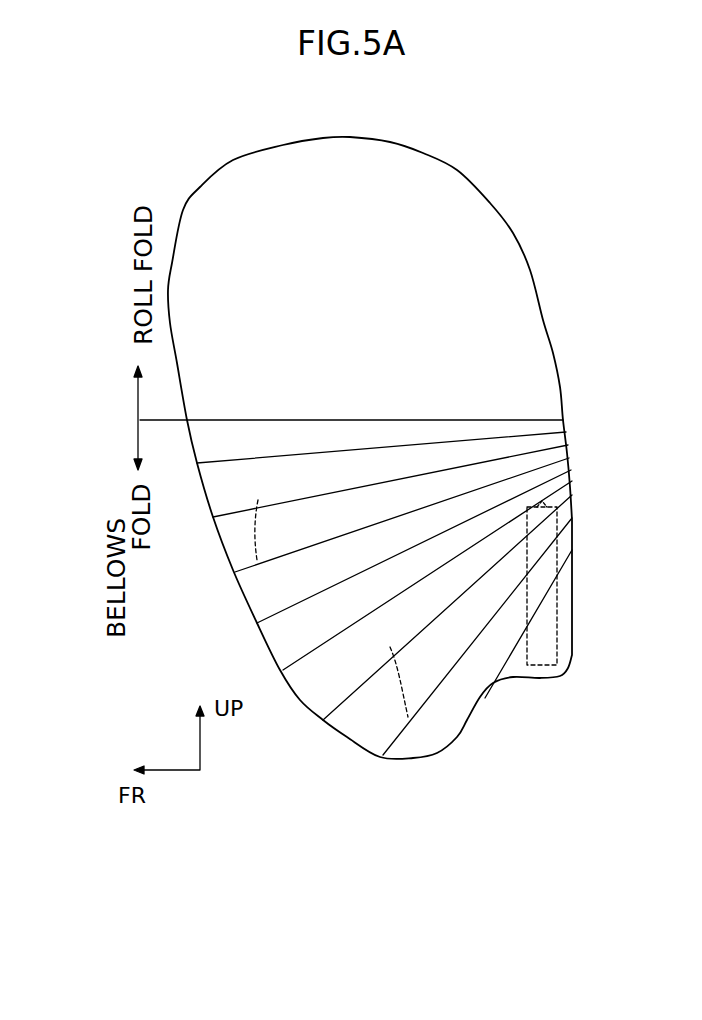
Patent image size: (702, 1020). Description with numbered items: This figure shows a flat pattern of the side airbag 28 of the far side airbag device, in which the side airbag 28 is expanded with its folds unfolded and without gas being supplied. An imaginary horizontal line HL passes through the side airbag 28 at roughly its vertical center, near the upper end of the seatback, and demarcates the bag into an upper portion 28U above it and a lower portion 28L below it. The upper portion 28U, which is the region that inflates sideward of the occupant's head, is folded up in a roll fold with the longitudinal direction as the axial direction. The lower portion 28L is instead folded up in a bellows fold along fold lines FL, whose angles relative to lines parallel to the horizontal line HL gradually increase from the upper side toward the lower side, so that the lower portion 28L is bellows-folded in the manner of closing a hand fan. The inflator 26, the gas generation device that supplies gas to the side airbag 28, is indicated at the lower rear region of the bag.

The side airbag 28 is at (486, 139).
The upper portion 28U is at (490, 253).
The lower portion 28L is at (277, 637).
The inflator 26 is at (547, 618).
The horizontal line HL is at (313, 418).
The fold lines FL is at (215, 462).